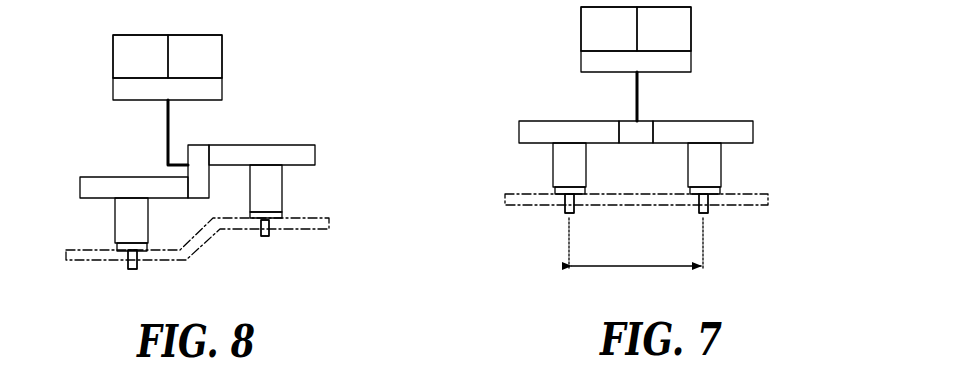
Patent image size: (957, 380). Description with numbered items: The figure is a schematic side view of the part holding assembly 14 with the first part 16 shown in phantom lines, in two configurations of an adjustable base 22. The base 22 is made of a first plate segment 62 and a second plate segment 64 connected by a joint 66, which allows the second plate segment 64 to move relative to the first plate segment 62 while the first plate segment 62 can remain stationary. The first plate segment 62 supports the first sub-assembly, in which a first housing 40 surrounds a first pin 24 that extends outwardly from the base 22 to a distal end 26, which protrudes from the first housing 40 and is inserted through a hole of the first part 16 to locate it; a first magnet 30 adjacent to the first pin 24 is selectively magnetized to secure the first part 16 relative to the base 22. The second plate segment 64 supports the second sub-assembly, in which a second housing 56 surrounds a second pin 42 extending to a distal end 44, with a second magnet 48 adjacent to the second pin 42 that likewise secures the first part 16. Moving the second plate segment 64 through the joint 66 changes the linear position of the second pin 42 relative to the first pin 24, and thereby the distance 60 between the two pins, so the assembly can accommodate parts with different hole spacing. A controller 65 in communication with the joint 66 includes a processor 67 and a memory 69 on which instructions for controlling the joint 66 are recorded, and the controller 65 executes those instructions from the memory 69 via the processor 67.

In FIG. 8, the part holding assembly 14 is at (327, 140).
In FIG. 7, the part holding assembly 14 is at (514, 120).
In FIG. 8, the first part 16 is at (330, 219).
In FIG. 7, the first part 16 is at (770, 194).
In FIG. 8, the base 22 is at (75, 190).
In FIG. 7, the base 22 is at (768, 133).
In FIG. 8, the first pin 24 is at (128, 262).
In FIG. 7, the first pin 24 is at (566, 207).
In FIG. 8, the distal end 26 is at (138, 263).
In FIG. 7, the distal end 26 is at (575, 208).
In FIG. 8, the first magnet 30 is at (146, 247).
In FIG. 7, the first magnet 30 is at (588, 192).
In FIG. 8, the first housing 40 is at (115, 230).
In FIG. 7, the first housing 40 is at (553, 173).
In FIG. 8, the second pin 42 is at (262, 233).
In FIG. 7, the second pin 42 is at (700, 208).
In FIG. 8, the distal end 44 is at (270, 233).
In FIG. 7, the distal end 44 is at (709, 210).
In FIG. 8, the second magnet 48 is at (278, 214).
In FIG. 7, the second magnet 48 is at (690, 190).
In FIG. 8, the second housing 56 is at (283, 195).
In FIG. 7, the second housing 56 is at (722, 172).
In FIG. 7, the distance 60 is at (632, 266).
In FIG. 8, the first plate segment 62 is at (133, 183).
In FIG. 7, the first plate segment 62 is at (567, 135).
In FIG. 8, the second plate segment 64 is at (287, 150).
In FIG. 7, the second plate segment 64 is at (725, 133).
In FIG. 8, the controller 65 is at (210, 100).
In FIG. 7, the controller 65 is at (679, 64).
In FIG. 8, the joint 66 is at (197, 152).
In FIG. 7, the joint 66 is at (647, 133).
In FIG. 8, the processor 67 is at (140, 56).
In FIG. 7, the processor 67 is at (609, 29).
In FIG. 8, the memory 69 is at (195, 56).
In FIG. 7, the memory 69 is at (664, 29).